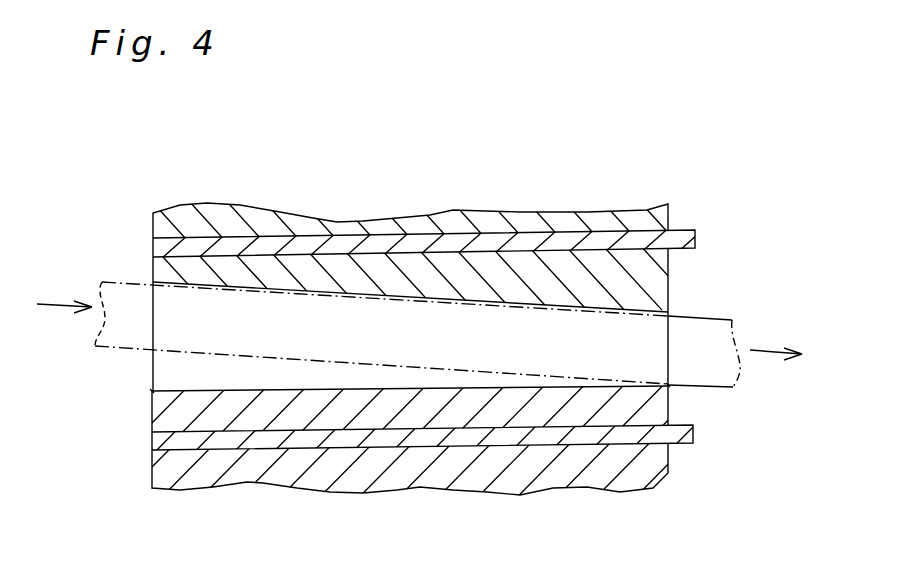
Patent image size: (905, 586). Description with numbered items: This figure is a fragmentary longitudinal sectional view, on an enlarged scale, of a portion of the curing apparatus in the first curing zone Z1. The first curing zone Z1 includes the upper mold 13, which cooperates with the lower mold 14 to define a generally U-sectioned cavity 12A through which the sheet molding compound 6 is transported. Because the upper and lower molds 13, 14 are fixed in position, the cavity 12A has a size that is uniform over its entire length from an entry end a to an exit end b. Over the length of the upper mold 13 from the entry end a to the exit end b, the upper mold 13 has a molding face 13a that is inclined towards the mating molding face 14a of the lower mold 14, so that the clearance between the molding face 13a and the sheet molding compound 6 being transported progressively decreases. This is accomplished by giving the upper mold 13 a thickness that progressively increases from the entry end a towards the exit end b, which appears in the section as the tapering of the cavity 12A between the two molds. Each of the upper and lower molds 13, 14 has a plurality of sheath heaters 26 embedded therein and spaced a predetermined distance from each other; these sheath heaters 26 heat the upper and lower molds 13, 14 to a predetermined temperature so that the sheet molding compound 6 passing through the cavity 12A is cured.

The upper mold 13 is at (563, 222).
The molding face 13a is at (439, 309).
The lower mold 14 is at (513, 455).
The mating molding face 14a is at (572, 388).
The sheath heaters 26 is at (177, 240).
The cavity 12A is at (337, 357).
The sheet molding compound 6 is at (132, 330).
The first curing zone Z1 is at (311, 195).
The entry end a is at (152, 391).
The exit end b is at (668, 385).